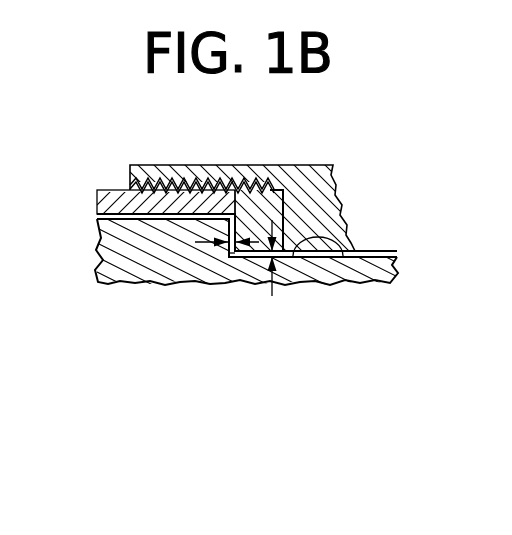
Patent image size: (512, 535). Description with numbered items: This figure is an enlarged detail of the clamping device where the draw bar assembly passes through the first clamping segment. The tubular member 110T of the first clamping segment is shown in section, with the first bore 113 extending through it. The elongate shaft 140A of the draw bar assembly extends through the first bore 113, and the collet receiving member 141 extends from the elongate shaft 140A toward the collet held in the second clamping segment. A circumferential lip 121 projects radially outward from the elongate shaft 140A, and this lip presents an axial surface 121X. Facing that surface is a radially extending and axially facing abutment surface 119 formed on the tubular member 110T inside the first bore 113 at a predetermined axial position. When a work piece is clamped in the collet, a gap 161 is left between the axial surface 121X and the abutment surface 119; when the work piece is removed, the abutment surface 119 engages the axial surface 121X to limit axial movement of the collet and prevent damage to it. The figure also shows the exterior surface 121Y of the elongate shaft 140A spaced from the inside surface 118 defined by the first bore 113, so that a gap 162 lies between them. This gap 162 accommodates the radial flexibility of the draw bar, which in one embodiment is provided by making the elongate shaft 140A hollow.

The tubular member 110T is at (124, 270).
The first bore 113 is at (372, 253).
The elongate shaft 140A is at (104, 203).
The collet receiving member 141 is at (320, 176).
The circumferential lip 121 is at (251, 216).
The axial surface 121X is at (222, 221).
The exterior surface 121Y is at (330, 263).
The inside surface 118 is at (295, 258).
The gap 161 is at (201, 243).
The gap 162 is at (272, 296).
The abutment surface 119 is at (231, 258).